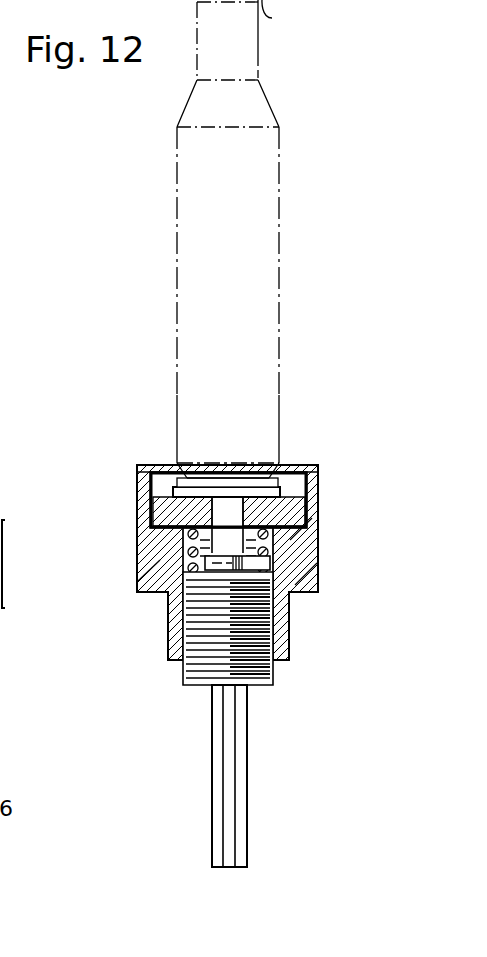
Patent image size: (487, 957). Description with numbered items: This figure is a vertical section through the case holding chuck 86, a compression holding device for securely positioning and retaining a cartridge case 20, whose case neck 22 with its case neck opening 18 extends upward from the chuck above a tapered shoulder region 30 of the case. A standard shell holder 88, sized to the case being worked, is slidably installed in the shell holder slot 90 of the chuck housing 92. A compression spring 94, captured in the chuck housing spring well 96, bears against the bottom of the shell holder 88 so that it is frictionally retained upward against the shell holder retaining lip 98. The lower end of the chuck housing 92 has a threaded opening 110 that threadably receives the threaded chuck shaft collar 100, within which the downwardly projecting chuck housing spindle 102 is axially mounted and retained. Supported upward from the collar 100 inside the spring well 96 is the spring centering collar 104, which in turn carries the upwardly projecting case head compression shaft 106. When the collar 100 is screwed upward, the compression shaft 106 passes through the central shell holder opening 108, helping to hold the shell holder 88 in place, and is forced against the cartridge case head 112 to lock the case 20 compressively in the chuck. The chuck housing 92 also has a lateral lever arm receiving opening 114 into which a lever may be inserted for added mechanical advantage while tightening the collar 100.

The case neck opening 18 is at (272, 18).
The case neck 22 is at (258, 42).
The tapered transition 30 is at (270, 105).
The cartridge case 20 is at (279, 228).
The case holding chuck 86 is at (337, 455).
The shell holder 88 is at (318, 511).
The shell holder slot 90 is at (150, 531).
The chuck housing 92 is at (137, 583).
The compression spring 94 is at (318, 550).
The chuck housing spring well 96 is at (160, 553).
The shell holder retaining lip 98 is at (288, 462).
The threaded chuck shaft collar 100 is at (272, 672).
The chuck housing spindle 102 is at (247, 780).
The spring centering collar 104 is at (190, 614).
The case head compression shaft 106 is at (318, 492).
The central shell holder opening 108 is at (152, 500).
The chuck housing threaded opening 110 is at (289, 632).
The cartridge case head 112 is at (137, 478).
The lateral lever arm receiving opening 114 is at (303, 578).